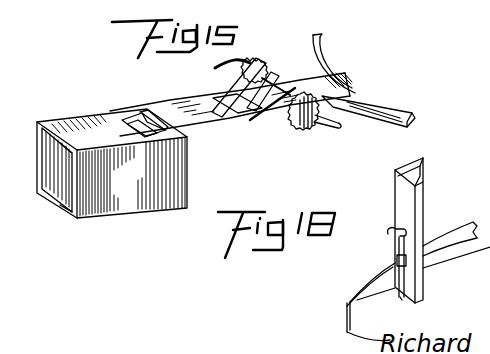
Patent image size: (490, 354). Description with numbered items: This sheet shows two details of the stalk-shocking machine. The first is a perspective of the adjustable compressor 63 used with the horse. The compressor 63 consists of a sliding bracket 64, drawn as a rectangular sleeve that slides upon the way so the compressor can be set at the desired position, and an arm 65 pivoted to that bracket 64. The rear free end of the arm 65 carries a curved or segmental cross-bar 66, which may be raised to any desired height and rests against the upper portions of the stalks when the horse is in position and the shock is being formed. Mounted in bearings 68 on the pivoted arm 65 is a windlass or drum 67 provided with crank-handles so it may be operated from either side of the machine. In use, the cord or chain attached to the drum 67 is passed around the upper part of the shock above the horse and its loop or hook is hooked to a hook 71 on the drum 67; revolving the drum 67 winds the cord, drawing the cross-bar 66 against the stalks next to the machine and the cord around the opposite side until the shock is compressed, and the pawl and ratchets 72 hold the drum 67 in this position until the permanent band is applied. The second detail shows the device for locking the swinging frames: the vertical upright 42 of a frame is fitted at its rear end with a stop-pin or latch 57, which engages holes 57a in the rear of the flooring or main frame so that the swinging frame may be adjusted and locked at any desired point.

In FIG. 18, the vertical upright 42 is at (426, 230).
In FIG. 18, the stop-pin or latch 57 is at (398, 247).
In FIG. 18, the holes 57a is at (418, 281).
In FIG. 15, the adjustable compressor 63 is at (231, 111).
In FIG. 15, the sliding bracket 64 is at (112, 163).
In FIG. 15, the arm 65 is at (318, 100).
In FIG. 15, the curved or segmental cross-bar 66 is at (364, 80).
In FIG. 15, the windlass or drum 67 is at (267, 73).
In FIG. 15, the bearings 68 is at (253, 60).
In FIG. 15, the hook 71 is at (264, 108).
In FIG. 15, the pawl and ratchets 72 is at (318, 125).